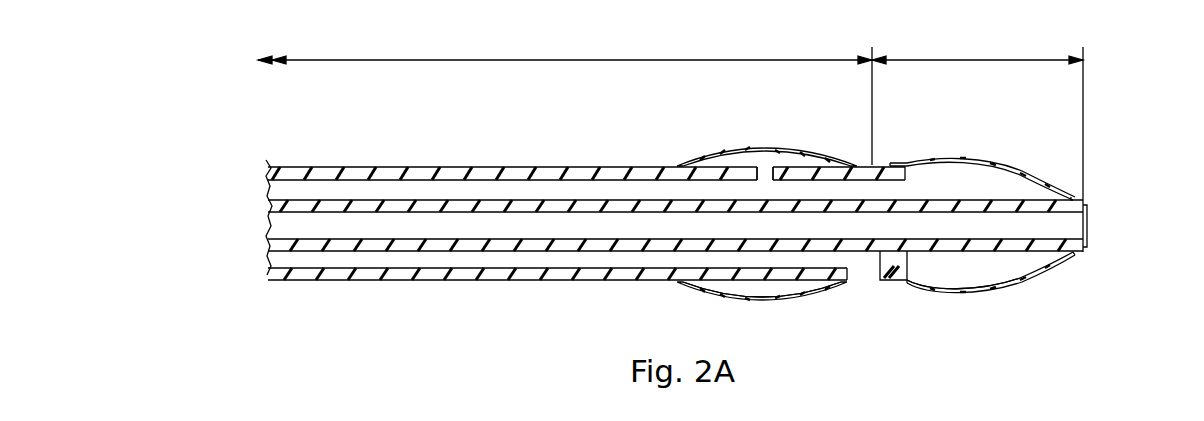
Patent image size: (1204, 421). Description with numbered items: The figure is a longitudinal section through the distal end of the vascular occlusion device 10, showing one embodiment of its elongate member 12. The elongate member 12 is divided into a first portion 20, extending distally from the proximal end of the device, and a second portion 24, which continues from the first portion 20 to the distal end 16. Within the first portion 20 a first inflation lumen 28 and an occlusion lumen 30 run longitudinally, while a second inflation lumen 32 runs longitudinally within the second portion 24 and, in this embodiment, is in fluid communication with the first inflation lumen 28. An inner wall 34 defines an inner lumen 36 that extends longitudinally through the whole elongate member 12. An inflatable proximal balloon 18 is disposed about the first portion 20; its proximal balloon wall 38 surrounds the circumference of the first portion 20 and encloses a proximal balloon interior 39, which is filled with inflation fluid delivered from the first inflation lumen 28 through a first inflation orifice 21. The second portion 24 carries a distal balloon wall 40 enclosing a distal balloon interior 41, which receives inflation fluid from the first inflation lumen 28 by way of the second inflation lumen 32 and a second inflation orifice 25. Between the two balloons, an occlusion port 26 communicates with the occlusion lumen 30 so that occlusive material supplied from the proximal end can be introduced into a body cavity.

The vascular occlusion device 10 is at (212, 145).
The elongate member 12 is at (593, 231).
The distal end 16 is at (1085, 203).
The proximal balloon 18 is at (749, 327).
The first portion 20 is at (568, 58).
The first inflation orifice 21 is at (762, 172).
The second portion 24 is at (1012, 58).
The second inflation orifice 25 is at (905, 190).
The occlusion port 26 is at (862, 283).
The first inflation lumen 28 is at (377, 188).
The occlusion lumen 30 is at (456, 253).
The second inflation lumen 32 is at (885, 190).
The inner wall 34 is at (312, 213).
The inner lumen 36 is at (346, 225).
The proximal balloon wall 38 is at (716, 160).
The proximal balloon interior 39 is at (772, 294).
The distal balloon wall 40 is at (991, 312).
The distal balloon interior 41 is at (946, 267).